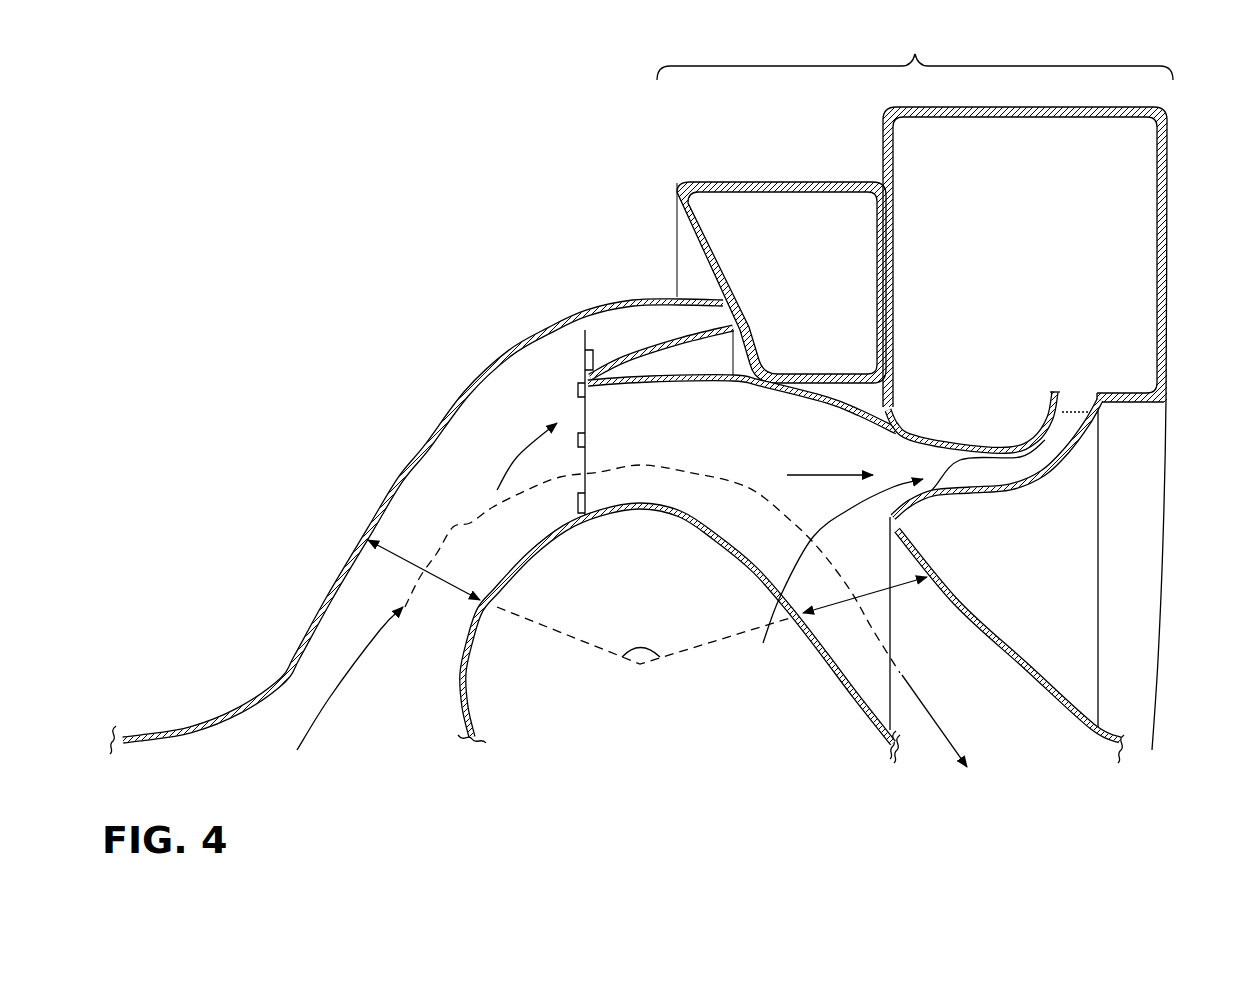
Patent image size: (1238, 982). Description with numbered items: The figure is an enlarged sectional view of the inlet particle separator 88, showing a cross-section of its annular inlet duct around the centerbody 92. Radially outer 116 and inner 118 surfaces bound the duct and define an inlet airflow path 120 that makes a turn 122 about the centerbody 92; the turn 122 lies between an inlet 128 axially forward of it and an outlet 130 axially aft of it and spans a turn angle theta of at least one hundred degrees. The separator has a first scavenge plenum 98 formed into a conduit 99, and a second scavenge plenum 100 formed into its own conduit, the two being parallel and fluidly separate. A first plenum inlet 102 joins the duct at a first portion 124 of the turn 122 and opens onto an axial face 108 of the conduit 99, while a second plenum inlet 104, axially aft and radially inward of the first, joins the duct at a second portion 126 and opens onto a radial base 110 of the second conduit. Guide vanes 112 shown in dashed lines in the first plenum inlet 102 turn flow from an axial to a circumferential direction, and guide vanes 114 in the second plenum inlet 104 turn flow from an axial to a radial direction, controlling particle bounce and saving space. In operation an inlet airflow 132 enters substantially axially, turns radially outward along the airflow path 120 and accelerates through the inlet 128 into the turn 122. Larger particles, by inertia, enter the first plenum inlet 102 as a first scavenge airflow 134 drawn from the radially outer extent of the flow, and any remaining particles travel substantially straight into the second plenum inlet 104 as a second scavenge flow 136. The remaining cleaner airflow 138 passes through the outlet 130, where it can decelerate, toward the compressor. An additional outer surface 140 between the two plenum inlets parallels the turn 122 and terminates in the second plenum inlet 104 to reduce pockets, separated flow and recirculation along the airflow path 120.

The inlet particle separator 88 is at (915, 54).
The conduit 99 is at (781, 248).
The first scavenge plenum 98 is at (777, 262).
The second scavenge plenum 100 is at (1007, 236).
The axial face 108 is at (697, 252).
The radial base 110 is at (1127, 402).
The guide vanes 112 is at (633, 337).
The guide vanes 114 is at (1053, 450).
The radially outer surface 116 is at (407, 457).
The radially inner surface 118 is at (473, 657).
The inlet airflow path 120 is at (467, 527).
The turn 122 is at (640, 478).
The first portion of the turn 124 is at (403, 547).
The second portion of the turn 126 is at (833, 538).
The inlet 128 is at (393, 558).
The outlet 130 is at (900, 587).
The inlet airflow 132 is at (320, 734).
The first scavenge airflow 134 is at (520, 457).
The second scavenge flow 136 is at (843, 473).
The cleaner airflow 138 is at (930, 718).
The additional outer surface 140 is at (705, 462).
The first plenum inlet 102 is at (580, 371).
The second plenum inlet 104 is at (833, 574).
The centerbody 92 is at (467, 633).